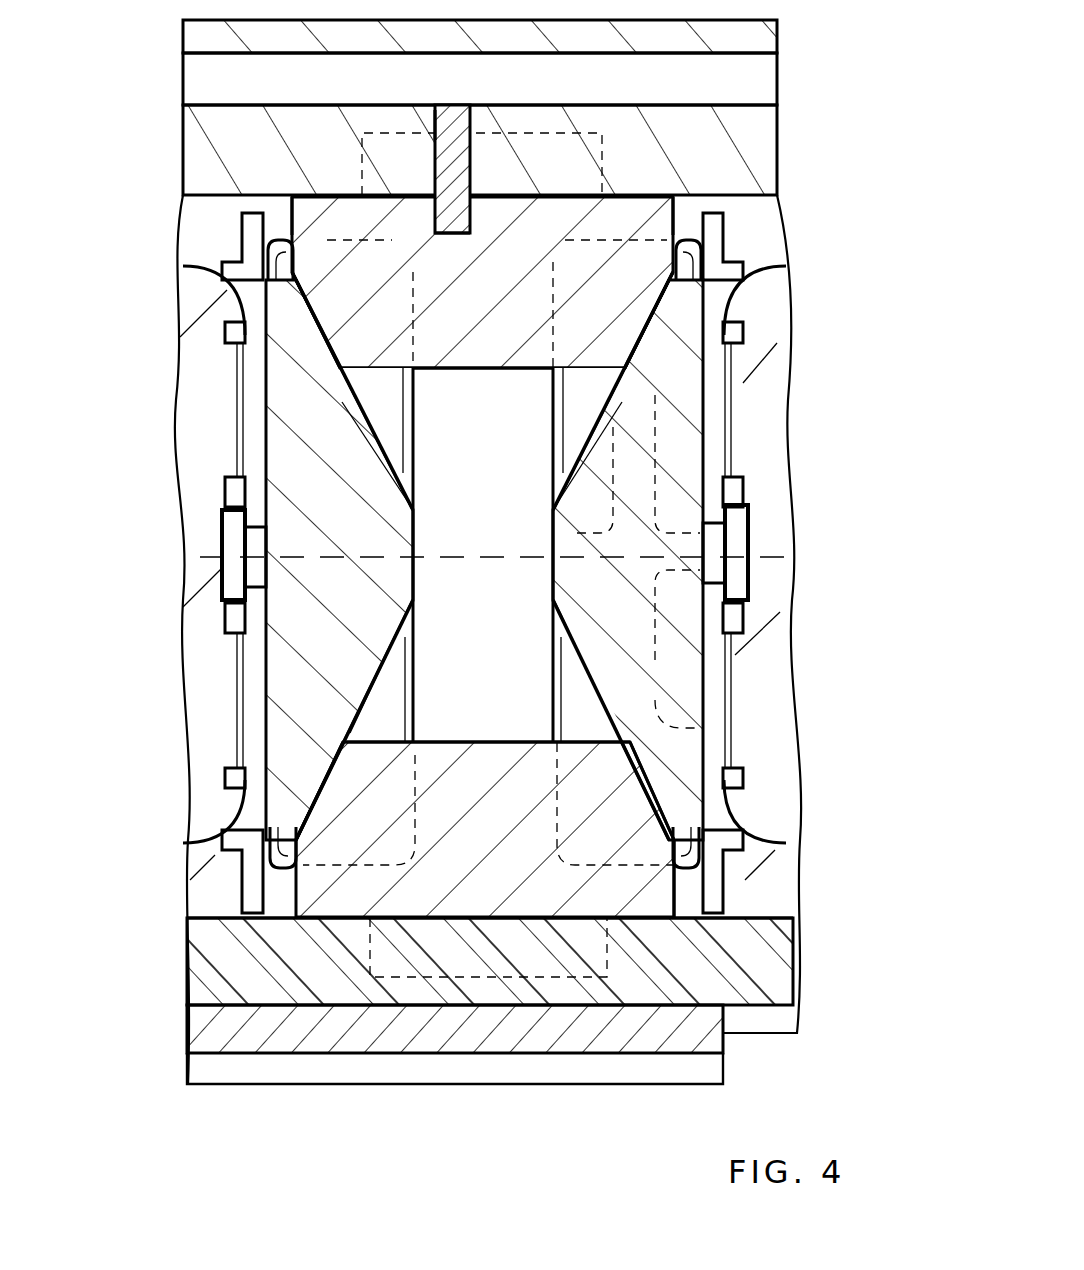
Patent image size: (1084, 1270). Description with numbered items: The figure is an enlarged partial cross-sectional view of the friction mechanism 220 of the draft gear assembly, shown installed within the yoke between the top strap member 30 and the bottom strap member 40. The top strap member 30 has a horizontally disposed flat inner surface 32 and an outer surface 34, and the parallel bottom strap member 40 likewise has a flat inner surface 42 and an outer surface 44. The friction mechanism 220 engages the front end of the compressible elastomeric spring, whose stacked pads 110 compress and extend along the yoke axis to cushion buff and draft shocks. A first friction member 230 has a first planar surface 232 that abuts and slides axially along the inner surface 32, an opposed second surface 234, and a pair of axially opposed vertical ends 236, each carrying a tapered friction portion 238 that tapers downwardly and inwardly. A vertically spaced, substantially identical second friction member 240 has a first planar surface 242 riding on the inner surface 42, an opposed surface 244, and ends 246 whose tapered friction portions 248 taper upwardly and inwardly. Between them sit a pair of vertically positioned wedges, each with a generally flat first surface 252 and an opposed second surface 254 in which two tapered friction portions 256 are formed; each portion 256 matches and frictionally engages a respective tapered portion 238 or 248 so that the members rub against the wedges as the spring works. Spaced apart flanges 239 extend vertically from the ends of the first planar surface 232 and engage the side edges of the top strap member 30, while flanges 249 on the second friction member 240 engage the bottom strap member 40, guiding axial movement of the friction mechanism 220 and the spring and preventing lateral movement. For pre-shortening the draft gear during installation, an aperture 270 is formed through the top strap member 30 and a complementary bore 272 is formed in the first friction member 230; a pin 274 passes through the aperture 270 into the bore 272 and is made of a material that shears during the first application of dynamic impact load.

The pad 110 is at (185, 412).
The flange 239 is at (506, 118).
The outer surface of top strap member 34 is at (748, 100).
The top strap member 30 is at (758, 134).
The inner surface of top strap member 32 is at (774, 197).
The first friction member 230 is at (369, 282).
The first planar surface 232 is at (482, 282).
The end of first friction member 236 is at (296, 220).
The tapered friction portion 238 is at (323, 323).
The second opposed surface 234 is at (483, 367).
The pin 274 is at (458, 130).
The aperture 270 is at (430, 114).
The bore 272 is at (455, 240).
The first surface of wedge 252 is at (365, 497).
The second surface of wedge 254 is at (410, 545).
The tapered friction portion of wedge 256 is at (324, 345).
The second friction member 240 is at (378, 829).
The first planar surface of second friction member 242 is at (465, 916).
The second opposed surface of second friction member 244 is at (505, 745).
The tapered friction portion 248 is at (355, 790).
The end of second friction member 246 is at (680, 891).
The inner surface of bottom strap member 42 is at (790, 906).
The bottom strap member 40 is at (782, 958).
The flange 249 is at (432, 978).
The outer surface of bottom strap member 44 is at (790, 1020).
The friction mechanism 220 is at (115, 996).